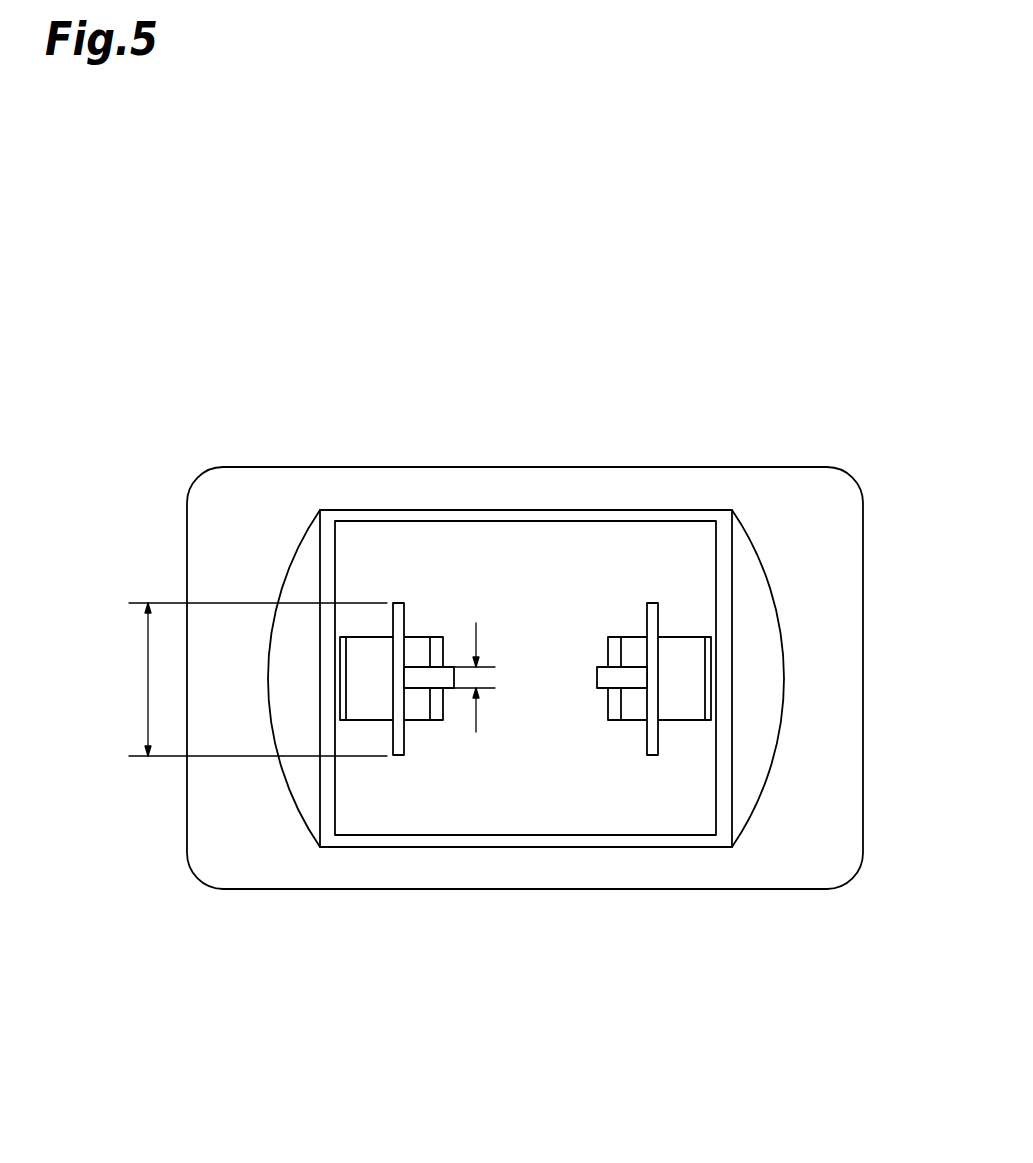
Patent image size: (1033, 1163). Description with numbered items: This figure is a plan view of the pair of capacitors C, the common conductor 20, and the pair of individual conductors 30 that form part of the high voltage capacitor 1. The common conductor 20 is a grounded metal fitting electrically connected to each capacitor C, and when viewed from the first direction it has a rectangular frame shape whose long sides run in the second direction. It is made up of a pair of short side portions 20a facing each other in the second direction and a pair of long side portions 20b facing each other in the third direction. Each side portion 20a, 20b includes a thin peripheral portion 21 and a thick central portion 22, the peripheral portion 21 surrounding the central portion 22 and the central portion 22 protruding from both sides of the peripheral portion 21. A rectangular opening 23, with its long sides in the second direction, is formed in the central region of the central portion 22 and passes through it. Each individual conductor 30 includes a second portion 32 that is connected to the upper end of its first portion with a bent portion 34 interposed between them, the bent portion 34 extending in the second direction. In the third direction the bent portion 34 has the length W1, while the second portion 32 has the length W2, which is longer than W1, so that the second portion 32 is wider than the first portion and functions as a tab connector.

The high voltage capacitor 1 is at (828, 413).
The common conductor 20 is at (215, 485).
The side portion 20a is at (232, 565).
The side portion 20b is at (525, 487).
The peripheral portion 21 is at (812, 588).
The central portion 22 is at (763, 660).
The opening 23 is at (713, 785).
The individual conductor 30 is at (451, 667).
The second portion 32 is at (397, 757).
The bent portion 34 is at (425, 720).
The capacitor C is at (418, 637).
The length W1 is at (496, 677).
The length W2 is at (242, 679).